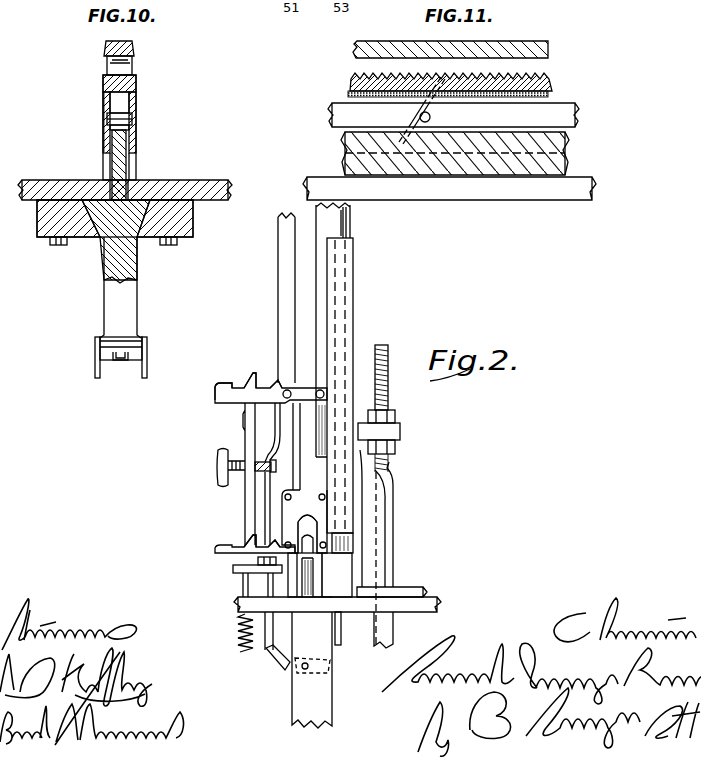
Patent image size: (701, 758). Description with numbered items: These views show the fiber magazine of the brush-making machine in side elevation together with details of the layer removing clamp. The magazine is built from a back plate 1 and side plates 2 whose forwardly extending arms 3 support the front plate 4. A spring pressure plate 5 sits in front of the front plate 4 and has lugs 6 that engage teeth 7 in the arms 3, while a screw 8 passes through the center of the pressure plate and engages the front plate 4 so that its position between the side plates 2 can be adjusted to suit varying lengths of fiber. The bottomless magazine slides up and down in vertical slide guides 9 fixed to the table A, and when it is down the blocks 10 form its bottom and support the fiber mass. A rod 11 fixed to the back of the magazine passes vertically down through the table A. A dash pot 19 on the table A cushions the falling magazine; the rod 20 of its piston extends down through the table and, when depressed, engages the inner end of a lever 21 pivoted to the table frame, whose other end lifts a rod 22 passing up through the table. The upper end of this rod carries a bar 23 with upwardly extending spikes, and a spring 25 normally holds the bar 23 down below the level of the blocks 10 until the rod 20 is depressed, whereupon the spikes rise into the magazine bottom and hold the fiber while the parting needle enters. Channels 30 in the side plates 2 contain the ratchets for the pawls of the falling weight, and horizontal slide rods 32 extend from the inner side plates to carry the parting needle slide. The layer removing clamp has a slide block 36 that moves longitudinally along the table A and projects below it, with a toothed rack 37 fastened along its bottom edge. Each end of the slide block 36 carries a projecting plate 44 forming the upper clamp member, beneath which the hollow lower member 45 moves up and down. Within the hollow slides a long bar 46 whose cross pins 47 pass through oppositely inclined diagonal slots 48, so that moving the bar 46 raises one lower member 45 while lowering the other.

In FIG. 2, the back plate 1 is at (350, 222).
In FIG. 2, the side plates 2 is at (299, 388).
In FIG. 2, the forwardly extending arms 3 is at (276, 385).
In FIG. 2, the front plate 4 is at (282, 441).
In FIG. 2, the spring pressure plate 5 is at (244, 428).
In FIG. 2, the lugs 6 is at (250, 386).
In FIG. 2, the teeth 7 is at (233, 383).
In FIG. 2, the screw 8 is at (259, 461).
In FIG. 2, the vertical slide guides 9 is at (354, 312).
In FIG. 2, the blocks 10 is at (318, 593).
In FIG. 2, the rod 11 is at (389, 372).
In FIG. 2, the dash pot 19 is at (336, 588).
In FIG. 2, the rod 20 is at (341, 638).
In FIG. 2, the lever 21 is at (286, 668).
In FIG. 2, the rod 22 is at (266, 641).
In FIG. 2, the bar 23 is at (282, 580).
In FIG. 2, the spring 25 is at (237, 633).
In FIG. 2, the channels 30 is at (278, 323).
In FIG. 2, the horizontal slide rods 32 is at (307, 530).
In FIG. 10, the slide block 36 is at (134, 166).
In FIG. 11, the slide block 36 is at (546, 156).
In FIG. 2, the slide block 36 is at (308, 575).
In FIG. 10, the toothed rack 37 is at (133, 355).
In FIG. 10, the longitudinally projecting plate 44 is at (134, 48).
In FIG. 11, the longitudinally projecting plate 44 is at (540, 49).
In FIG. 10, the lower member 45 is at (131, 76).
In FIG. 11, the lower member 45 is at (546, 78).
In FIG. 10, the long bar 46 is at (104, 100).
In FIG. 11, the long bar 46 is at (453, 115).
In FIG. 10, the cross pins 47 is at (126, 118).
In FIG. 11, the cross pins 47 is at (448, 97).
In FIG. 10, the diagonal slots 48 is at (138, 113).
In FIG. 11, the diagonal slots 48 is at (450, 97).
In FIG. 10, the table A is at (58, 180).
In FIG. 11, the table A is at (455, 192).
In FIG. 2, the table A is at (428, 605).